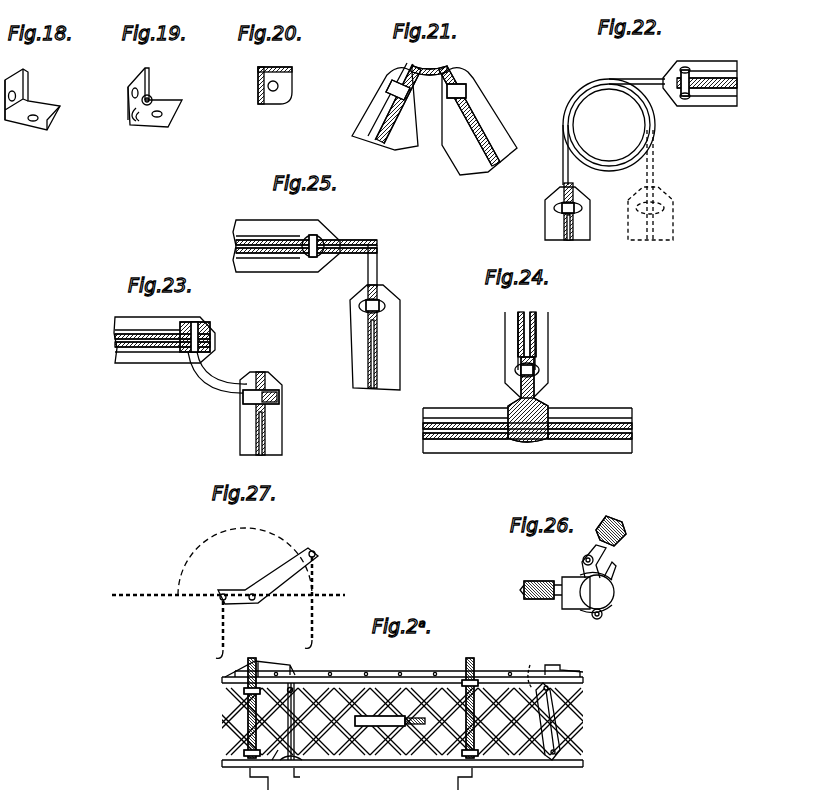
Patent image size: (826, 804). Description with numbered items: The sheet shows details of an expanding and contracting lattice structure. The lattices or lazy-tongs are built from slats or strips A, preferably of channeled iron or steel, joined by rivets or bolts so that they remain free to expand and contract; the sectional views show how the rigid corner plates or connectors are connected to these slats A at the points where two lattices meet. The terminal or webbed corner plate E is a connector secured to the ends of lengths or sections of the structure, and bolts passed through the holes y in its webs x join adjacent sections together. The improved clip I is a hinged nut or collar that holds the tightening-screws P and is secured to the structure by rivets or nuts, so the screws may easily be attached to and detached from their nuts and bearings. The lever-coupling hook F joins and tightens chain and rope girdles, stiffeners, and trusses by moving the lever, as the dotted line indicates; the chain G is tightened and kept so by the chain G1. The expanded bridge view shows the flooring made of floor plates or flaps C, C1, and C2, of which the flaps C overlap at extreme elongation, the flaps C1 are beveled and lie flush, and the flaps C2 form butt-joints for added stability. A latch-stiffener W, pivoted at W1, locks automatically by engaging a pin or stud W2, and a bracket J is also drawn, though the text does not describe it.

In FIG. 21, the slats or strips A is at (437, 119).
In FIG. 22, the slats or strips A is at (705, 98).
In FIG. 25, the slats or strips A is at (268, 228).
In FIG. 23, the slats or strips A is at (143, 325).
In FIG. 24, the slats or strips A is at (542, 350).
In FIG. 20, the terminal or webbed corner plate E is at (284, 85).
In FIG. 20, the webs x is at (265, 68).
In FIG. 20, the holes y is at (285, 68).
In FIG. 27, the chain G is at (155, 598).
In FIG. 27, the chain G1 is at (264, 607).
In FIG. 27, the lever-coupling hook F is at (268, 596).
In FIG. 2A, the lever-coupling hook F is at (552, 721).
In FIG. 26, the clip I is at (573, 567).
In FIG. 2A, the clip I is at (232, 691).
In FIG. 2A, the floor plates or flaps C is at (532, 668).
In FIG. 2A, the floor plates or flaps C1 is at (402, 668).
In FIG. 2A, the floor plates or flaps C2 is at (228, 676).
In FIG. 2A, the tightening-screws P is at (369, 724).
In FIG. 2A, the latch-stiffener W is at (312, 722).
In FIG. 2A, the pivot W1 is at (296, 690).
In FIG. 2A, the pin or stud W2 is at (300, 769).
In FIG. 2A, the bracket J is at (270, 757).